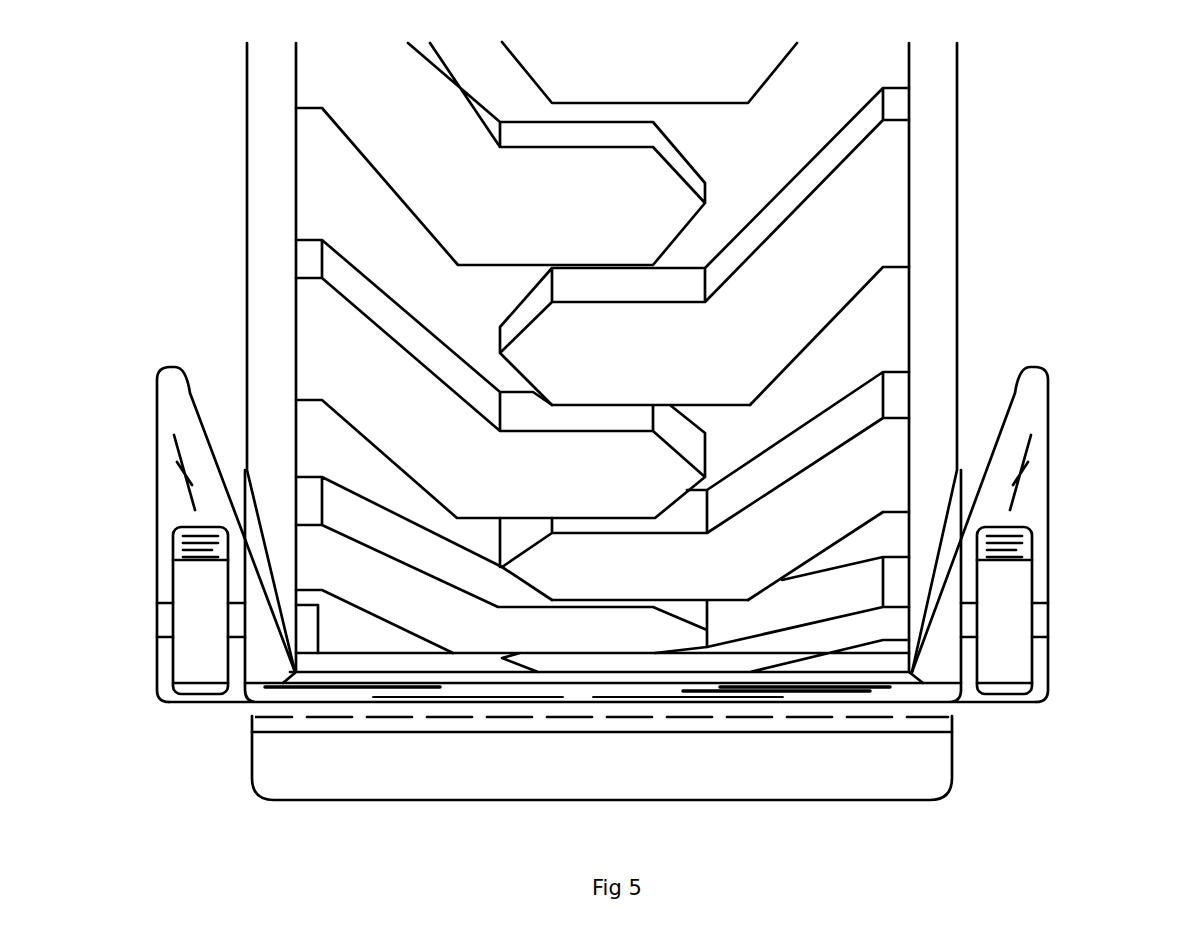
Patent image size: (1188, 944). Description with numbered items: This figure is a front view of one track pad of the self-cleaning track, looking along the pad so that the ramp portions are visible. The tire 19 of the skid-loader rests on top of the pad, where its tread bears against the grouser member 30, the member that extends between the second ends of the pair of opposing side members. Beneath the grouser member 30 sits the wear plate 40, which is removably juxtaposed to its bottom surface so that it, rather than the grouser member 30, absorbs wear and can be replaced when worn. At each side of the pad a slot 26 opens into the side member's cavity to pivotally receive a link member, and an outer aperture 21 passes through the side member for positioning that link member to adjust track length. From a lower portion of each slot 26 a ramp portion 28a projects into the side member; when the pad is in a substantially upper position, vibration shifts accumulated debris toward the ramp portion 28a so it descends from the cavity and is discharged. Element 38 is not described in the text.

The tire 19 is at (878, 201).
The outer aperture 21 is at (250, 613).
The slot 26 is at (175, 665).
The ramp portion 28a is at (195, 688).
The grouser member 30 is at (660, 722).
The support plate 38 is at (898, 727).
The wear plate 40 is at (462, 763).